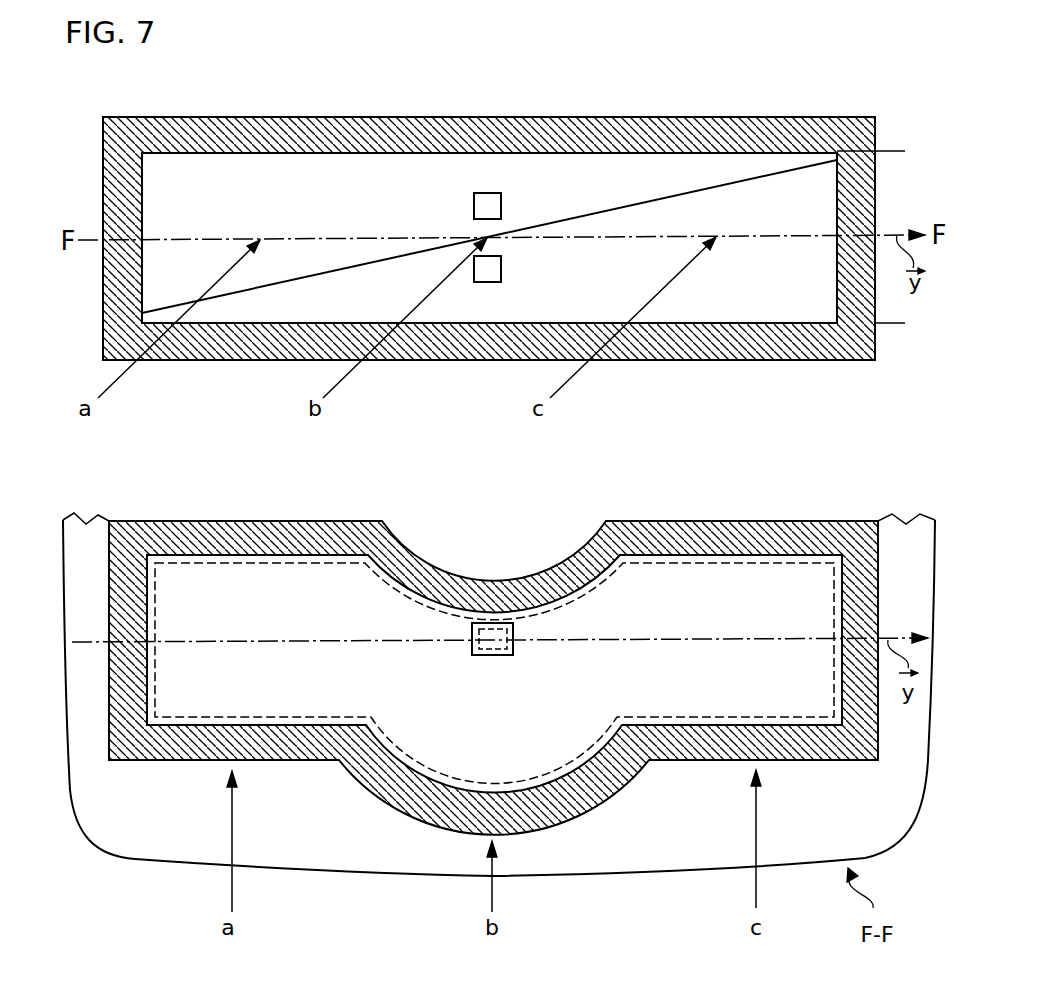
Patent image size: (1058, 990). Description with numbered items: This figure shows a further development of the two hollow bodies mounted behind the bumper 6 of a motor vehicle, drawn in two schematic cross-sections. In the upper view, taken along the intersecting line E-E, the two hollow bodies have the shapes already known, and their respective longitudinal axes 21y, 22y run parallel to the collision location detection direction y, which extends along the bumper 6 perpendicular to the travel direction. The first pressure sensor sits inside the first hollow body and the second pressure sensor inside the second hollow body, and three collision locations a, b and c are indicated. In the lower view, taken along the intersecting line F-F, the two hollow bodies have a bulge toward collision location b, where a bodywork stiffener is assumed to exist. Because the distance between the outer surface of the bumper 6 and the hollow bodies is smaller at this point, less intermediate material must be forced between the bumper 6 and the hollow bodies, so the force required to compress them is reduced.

The longitudinal axis of the first hollow body 21y is at (898, 151).
The longitudinal axis of the second hollow body 22y is at (898, 323).
The bumper 6 is at (620, 873).